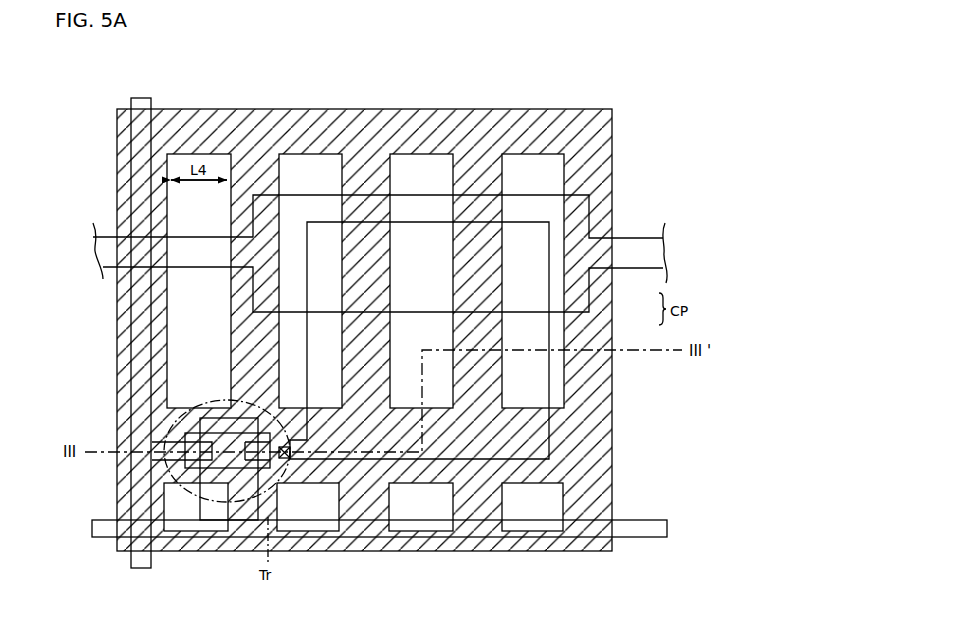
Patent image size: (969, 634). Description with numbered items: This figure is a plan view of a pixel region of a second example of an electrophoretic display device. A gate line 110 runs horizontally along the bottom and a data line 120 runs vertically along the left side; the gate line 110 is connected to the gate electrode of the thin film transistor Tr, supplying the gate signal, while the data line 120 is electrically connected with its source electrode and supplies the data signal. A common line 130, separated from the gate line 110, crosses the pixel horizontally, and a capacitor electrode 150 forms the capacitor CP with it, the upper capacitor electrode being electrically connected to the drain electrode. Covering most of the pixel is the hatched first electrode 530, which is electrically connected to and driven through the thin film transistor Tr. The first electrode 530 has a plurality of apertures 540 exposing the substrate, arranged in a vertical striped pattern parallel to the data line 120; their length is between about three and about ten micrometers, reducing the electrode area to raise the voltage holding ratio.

The gate line 110 is at (668, 530).
The data line 120 is at (140, 190).
The common line 130 is at (667, 253).
The capacitor electrode 150 is at (557, 300).
The first electrode 530 is at (595, 378).
The aperture 540 is at (543, 165).